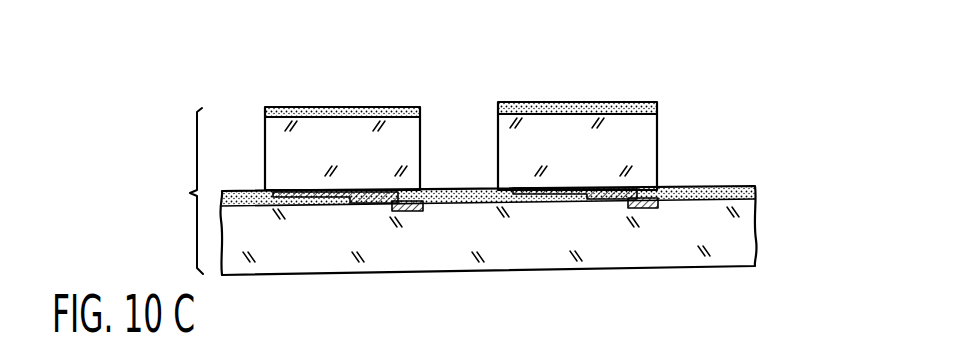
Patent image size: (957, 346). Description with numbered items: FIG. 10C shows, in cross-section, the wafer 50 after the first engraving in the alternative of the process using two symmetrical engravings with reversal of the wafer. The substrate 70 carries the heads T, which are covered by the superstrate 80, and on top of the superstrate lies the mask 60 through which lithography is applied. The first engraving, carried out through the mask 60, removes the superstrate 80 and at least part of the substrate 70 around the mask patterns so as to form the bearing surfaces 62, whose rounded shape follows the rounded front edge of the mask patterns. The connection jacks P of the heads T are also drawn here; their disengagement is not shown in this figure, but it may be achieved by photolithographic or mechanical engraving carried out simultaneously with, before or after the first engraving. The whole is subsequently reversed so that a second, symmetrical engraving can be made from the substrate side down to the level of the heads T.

The wafer 50 is at (177, 191).
The mask 60 is at (423, 108).
The bearing surfaces 62 is at (421, 150).
The superstrate 80 is at (657, 130).
The substrate 70 is at (745, 222).
The connection jacks P is at (532, 188).
The heads T is at (380, 208).